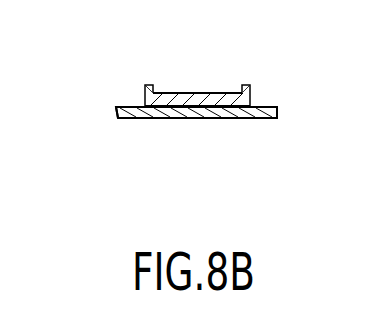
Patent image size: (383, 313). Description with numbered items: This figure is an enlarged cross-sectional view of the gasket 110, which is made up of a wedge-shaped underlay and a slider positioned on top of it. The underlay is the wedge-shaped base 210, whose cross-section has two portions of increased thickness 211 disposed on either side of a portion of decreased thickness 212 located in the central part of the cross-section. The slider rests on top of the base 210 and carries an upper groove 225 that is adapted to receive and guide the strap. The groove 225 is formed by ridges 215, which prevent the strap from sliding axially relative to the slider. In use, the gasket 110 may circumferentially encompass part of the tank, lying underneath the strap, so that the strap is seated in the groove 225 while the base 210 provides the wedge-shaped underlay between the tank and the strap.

The gasket 110 is at (187, 137).
The wedge-shaped base 210 is at (117, 108).
The portions of increased thickness 211 is at (300, 152).
The portion of decreased thickness 212 is at (192, 117).
The ridges 215 is at (249, 86).
The upper groove 225 is at (207, 88).